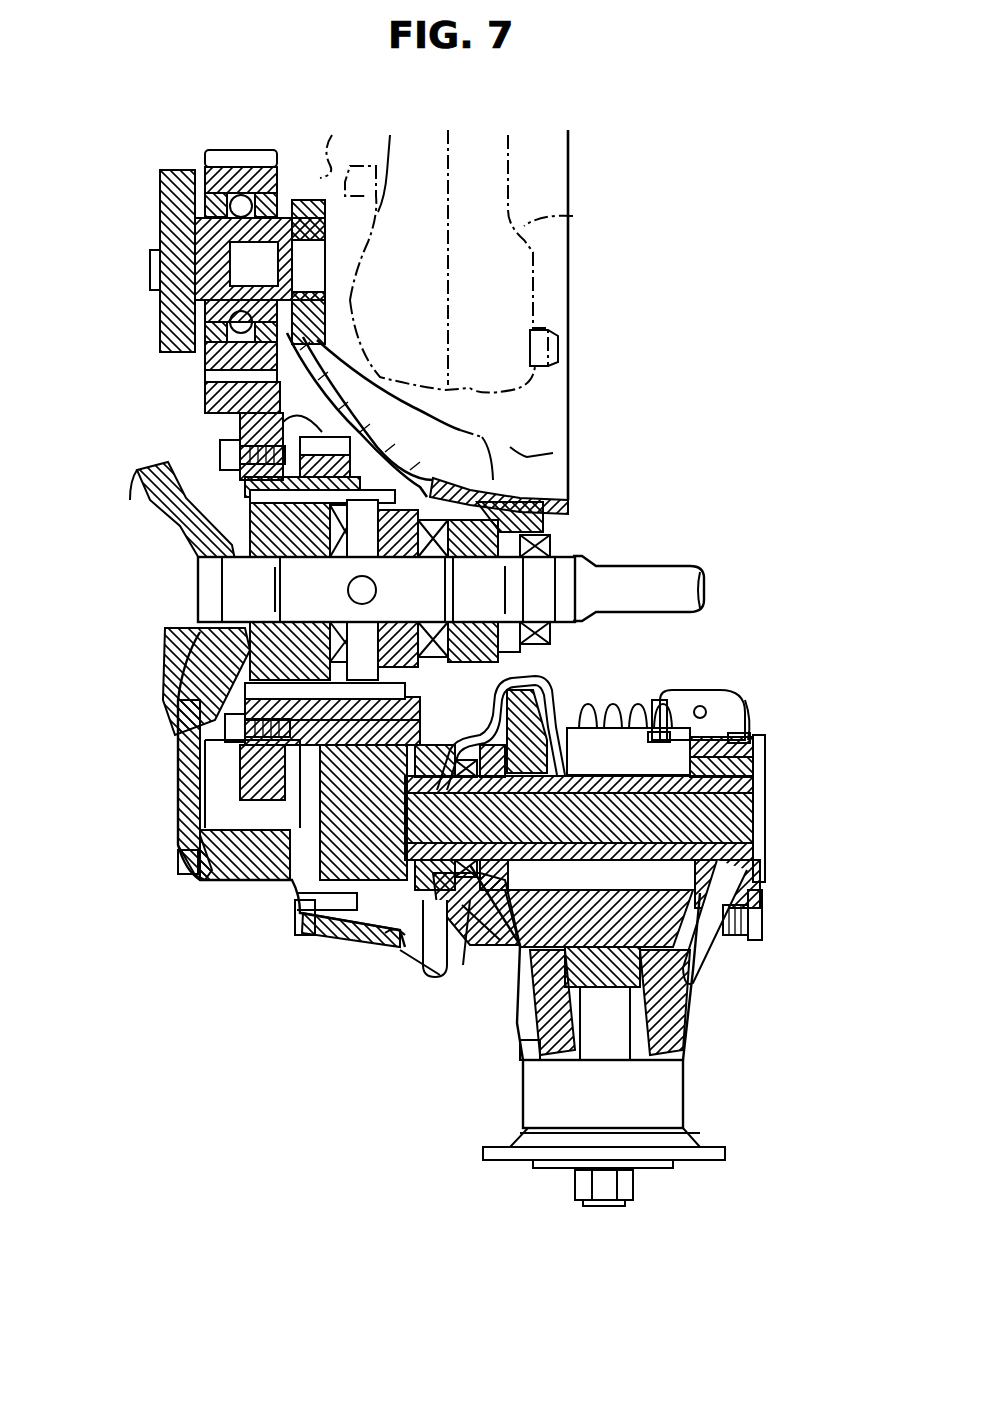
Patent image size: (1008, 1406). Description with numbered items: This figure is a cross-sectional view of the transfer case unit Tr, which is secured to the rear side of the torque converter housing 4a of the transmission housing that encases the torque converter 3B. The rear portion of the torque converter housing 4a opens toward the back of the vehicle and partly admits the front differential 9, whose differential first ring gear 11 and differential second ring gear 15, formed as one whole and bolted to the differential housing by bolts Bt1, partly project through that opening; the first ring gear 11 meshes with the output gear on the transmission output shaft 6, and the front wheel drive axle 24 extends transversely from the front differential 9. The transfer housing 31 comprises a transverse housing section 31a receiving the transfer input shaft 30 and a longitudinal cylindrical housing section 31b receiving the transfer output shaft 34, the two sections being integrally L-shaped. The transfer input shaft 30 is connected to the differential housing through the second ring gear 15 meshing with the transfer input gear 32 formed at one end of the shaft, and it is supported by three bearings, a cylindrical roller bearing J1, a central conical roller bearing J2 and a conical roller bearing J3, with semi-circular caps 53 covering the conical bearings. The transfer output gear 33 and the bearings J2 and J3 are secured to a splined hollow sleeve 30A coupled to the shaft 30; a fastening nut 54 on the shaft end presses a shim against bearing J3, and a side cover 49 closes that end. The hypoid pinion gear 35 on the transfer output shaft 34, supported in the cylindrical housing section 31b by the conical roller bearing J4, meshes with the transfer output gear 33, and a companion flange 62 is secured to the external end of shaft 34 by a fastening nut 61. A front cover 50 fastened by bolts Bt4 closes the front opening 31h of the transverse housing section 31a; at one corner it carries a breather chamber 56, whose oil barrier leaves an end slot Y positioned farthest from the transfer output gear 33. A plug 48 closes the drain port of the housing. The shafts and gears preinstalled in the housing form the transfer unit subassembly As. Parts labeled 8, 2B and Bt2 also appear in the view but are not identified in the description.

The bearing 8 is at (250, 160).
The torque converter 3B is at (573, 216).
The transmission output shaft 6 is at (165, 292).
The differential first ring gear 11 is at (202, 397).
The differential second ring gear 15 is at (240, 420).
The bolts Bt1 is at (220, 456).
The front differential 9 is at (423, 495).
The torque converter housing 4a is at (553, 519).
The front wheel drive axle 24 is at (647, 566).
The breather chamber 56 is at (688, 690).
The front cover 50 is at (730, 690).
The hollow sleeve 30A is at (560, 730).
The semi-circular caps 53 is at (484, 720).
The end slot Y is at (732, 712).
The fastening bolts Bt4 is at (765, 735).
The front opening 31h is at (628, 739).
The transfer case unit Tr is at (752, 776).
The side cover 49 is at (766, 790).
The transfer input shaft 30 is at (762, 810).
The fastening nut 54 is at (766, 851).
The transfer unit subassembly As is at (780, 879).
The bolt Bt2 is at (178, 860).
The plug 48 is at (762, 922).
The housing 2B is at (217, 884).
The transfer input gear 32 is at (303, 932).
The cylindrical roller bearing J1 is at (400, 922).
The central conical roller bearing J2 is at (483, 933).
The bearing 33 is at (522, 980).
The conical roller bearing J3 is at (712, 955).
The transverse housing section 31a is at (410, 945).
The hypoid pinion gear 35 is at (542, 1012).
The transfer housing 31 is at (707, 955).
The transfer output shaft 34 is at (526, 1052).
The conical roller bearing J4 is at (691, 1017).
The longitudinal cylindrical housing section 31b is at (710, 1104).
The companion flange 62 is at (734, 1160).
The fastening nut 61 is at (637, 1187).